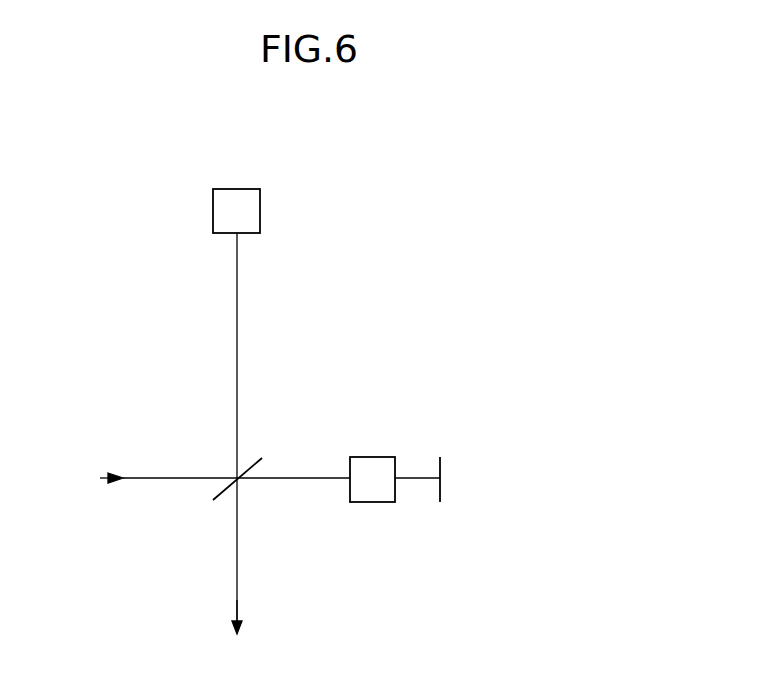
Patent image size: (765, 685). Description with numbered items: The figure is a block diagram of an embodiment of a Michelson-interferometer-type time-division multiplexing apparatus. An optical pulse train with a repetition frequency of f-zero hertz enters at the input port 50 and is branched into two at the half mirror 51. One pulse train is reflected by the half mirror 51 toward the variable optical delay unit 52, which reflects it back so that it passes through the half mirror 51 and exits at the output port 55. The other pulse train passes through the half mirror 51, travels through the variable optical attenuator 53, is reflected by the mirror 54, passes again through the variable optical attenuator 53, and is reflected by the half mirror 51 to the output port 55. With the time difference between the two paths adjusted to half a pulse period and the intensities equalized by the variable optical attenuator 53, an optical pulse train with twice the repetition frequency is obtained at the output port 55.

The input port 50 is at (104, 478).
The half mirror 51 is at (243, 468).
The variable optical delay unit 52 is at (261, 212).
The variable optical attenuator 53 is at (372, 503).
The mirror 54 is at (440, 457).
The output port 55 is at (241, 636).